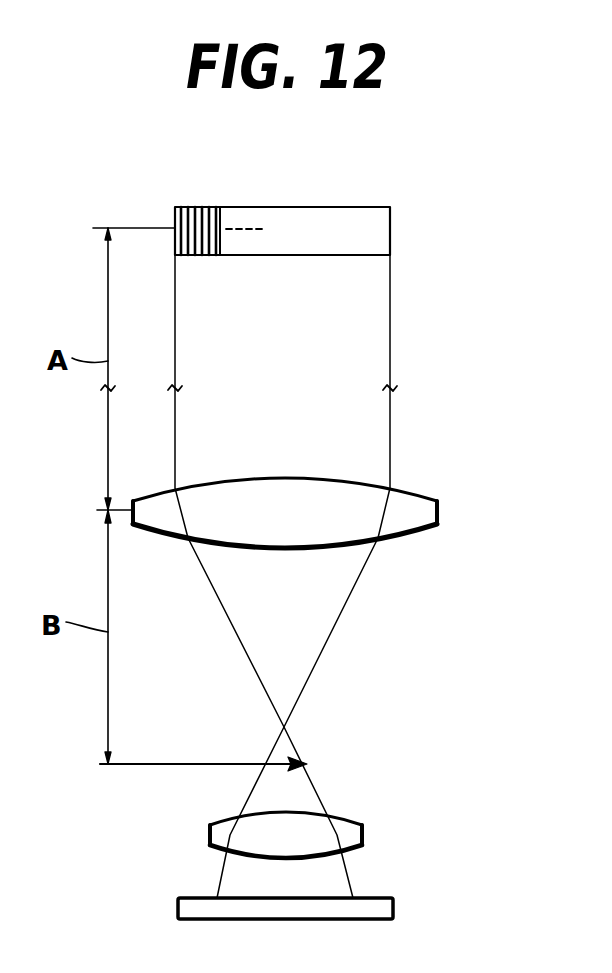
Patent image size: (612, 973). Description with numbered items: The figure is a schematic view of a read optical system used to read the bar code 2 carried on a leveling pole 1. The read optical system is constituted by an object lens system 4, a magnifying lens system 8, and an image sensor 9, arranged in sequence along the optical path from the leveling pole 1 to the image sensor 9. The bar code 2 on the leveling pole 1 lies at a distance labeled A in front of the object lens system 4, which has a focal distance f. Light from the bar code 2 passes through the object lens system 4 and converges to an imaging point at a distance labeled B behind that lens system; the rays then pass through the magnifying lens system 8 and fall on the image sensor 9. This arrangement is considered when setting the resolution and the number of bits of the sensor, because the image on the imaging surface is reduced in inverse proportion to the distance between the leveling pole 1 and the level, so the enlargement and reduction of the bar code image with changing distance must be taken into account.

The leveling pole 1 is at (337, 199).
The bar code 2 is at (412, 225).
The object lens system 4 is at (410, 494).
The magnifying lens system 8 is at (363, 834).
The image sensor 9 is at (394, 907).